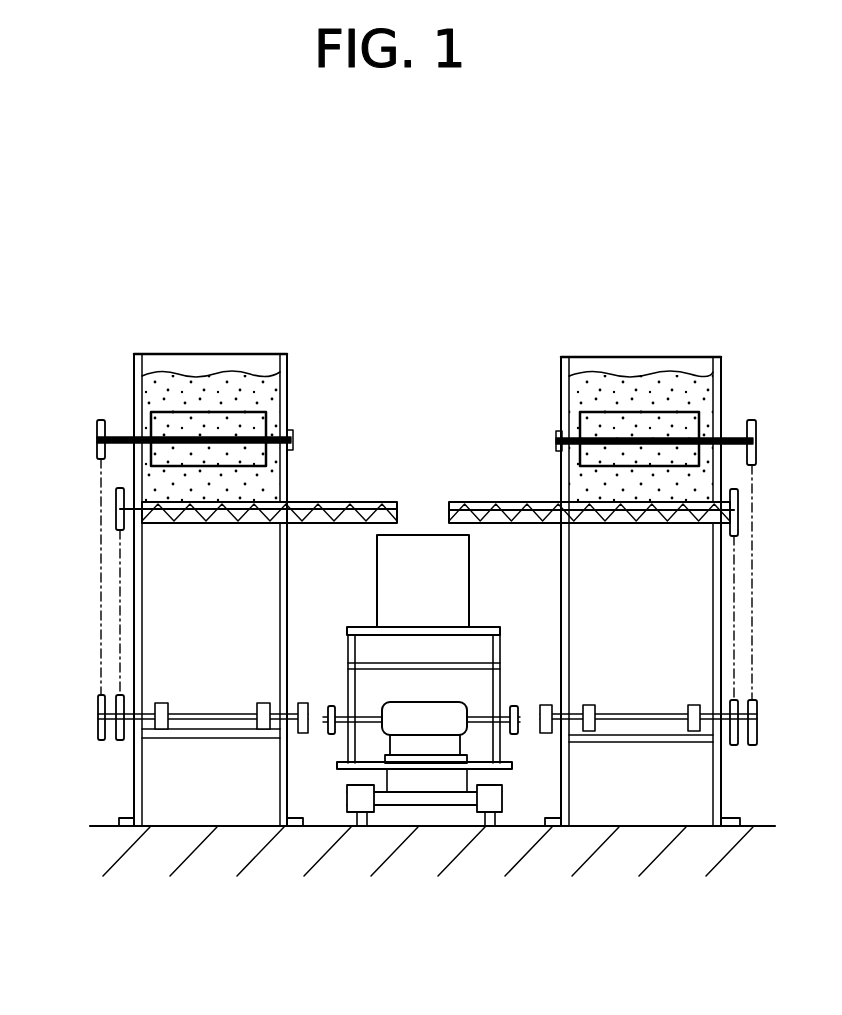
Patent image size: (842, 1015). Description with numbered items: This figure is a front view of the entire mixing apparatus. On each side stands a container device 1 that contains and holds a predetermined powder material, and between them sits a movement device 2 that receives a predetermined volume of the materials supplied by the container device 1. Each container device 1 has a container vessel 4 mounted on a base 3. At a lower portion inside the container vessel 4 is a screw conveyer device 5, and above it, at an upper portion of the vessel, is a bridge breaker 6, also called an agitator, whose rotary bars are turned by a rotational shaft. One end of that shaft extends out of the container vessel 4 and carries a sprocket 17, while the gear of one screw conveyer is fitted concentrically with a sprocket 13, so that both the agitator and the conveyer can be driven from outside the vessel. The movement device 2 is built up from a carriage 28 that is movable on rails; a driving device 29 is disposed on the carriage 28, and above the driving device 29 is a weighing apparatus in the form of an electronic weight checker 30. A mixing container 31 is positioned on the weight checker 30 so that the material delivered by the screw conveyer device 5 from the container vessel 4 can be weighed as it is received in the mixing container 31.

The container device 1 is at (232, 345).
The movement device 2 is at (419, 524).
The base 3 is at (134, 770).
The container vessel 4 is at (132, 388).
The screw conveyer device 5 is at (247, 506).
The bridge breaker 6 is at (238, 410).
The sprocket 13 is at (117, 510).
The sprocket 17 is at (97, 440).
The carriage 28 is at (497, 769).
The driving device 29 is at (404, 715).
The electronic weight checker 30 is at (465, 647).
The mixing container 31 is at (431, 594).